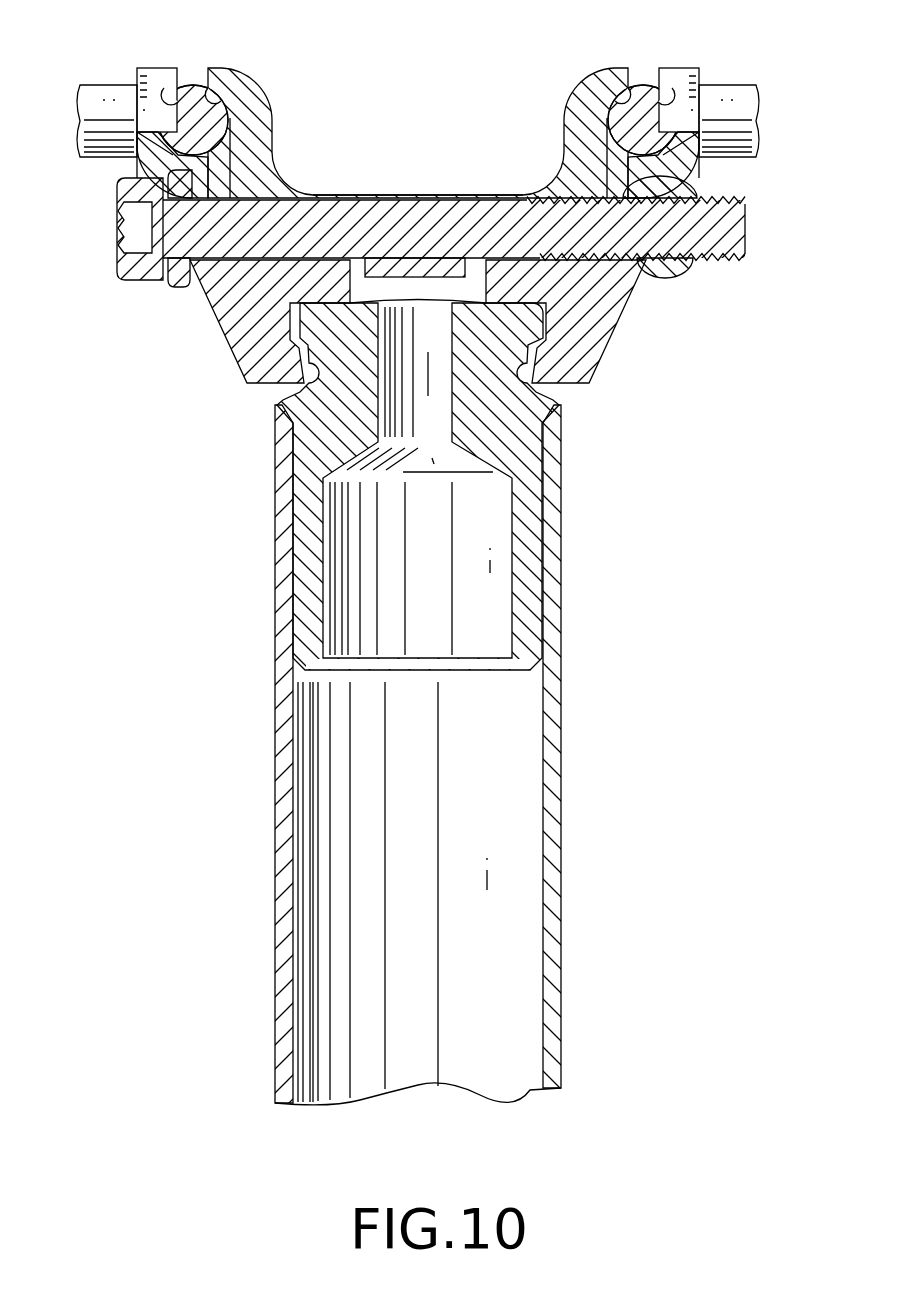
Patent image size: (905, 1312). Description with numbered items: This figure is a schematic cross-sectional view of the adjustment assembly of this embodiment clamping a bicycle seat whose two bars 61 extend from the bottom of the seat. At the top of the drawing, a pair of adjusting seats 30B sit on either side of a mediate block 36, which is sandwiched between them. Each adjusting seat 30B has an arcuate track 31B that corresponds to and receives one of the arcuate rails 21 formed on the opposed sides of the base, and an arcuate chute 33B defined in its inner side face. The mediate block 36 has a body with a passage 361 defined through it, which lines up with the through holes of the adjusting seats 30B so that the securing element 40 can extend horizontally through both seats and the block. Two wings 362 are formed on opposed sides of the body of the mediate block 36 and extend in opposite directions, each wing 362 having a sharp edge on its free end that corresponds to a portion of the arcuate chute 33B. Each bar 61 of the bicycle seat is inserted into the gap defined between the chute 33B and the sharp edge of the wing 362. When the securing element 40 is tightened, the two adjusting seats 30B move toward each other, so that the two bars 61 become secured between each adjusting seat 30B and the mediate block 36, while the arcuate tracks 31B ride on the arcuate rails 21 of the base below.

The arcuate rail 21 is at (533, 320).
The adjusting seat 30B is at (132, 168).
The arcuate track 31B is at (312, 350).
The arcuate chute 33B is at (175, 100).
The mediate block 36 is at (540, 173).
The passage 361 is at (437, 210).
The wing 362 is at (217, 97).
The securing element 40 is at (110, 247).
The bar 61 is at (220, 122).